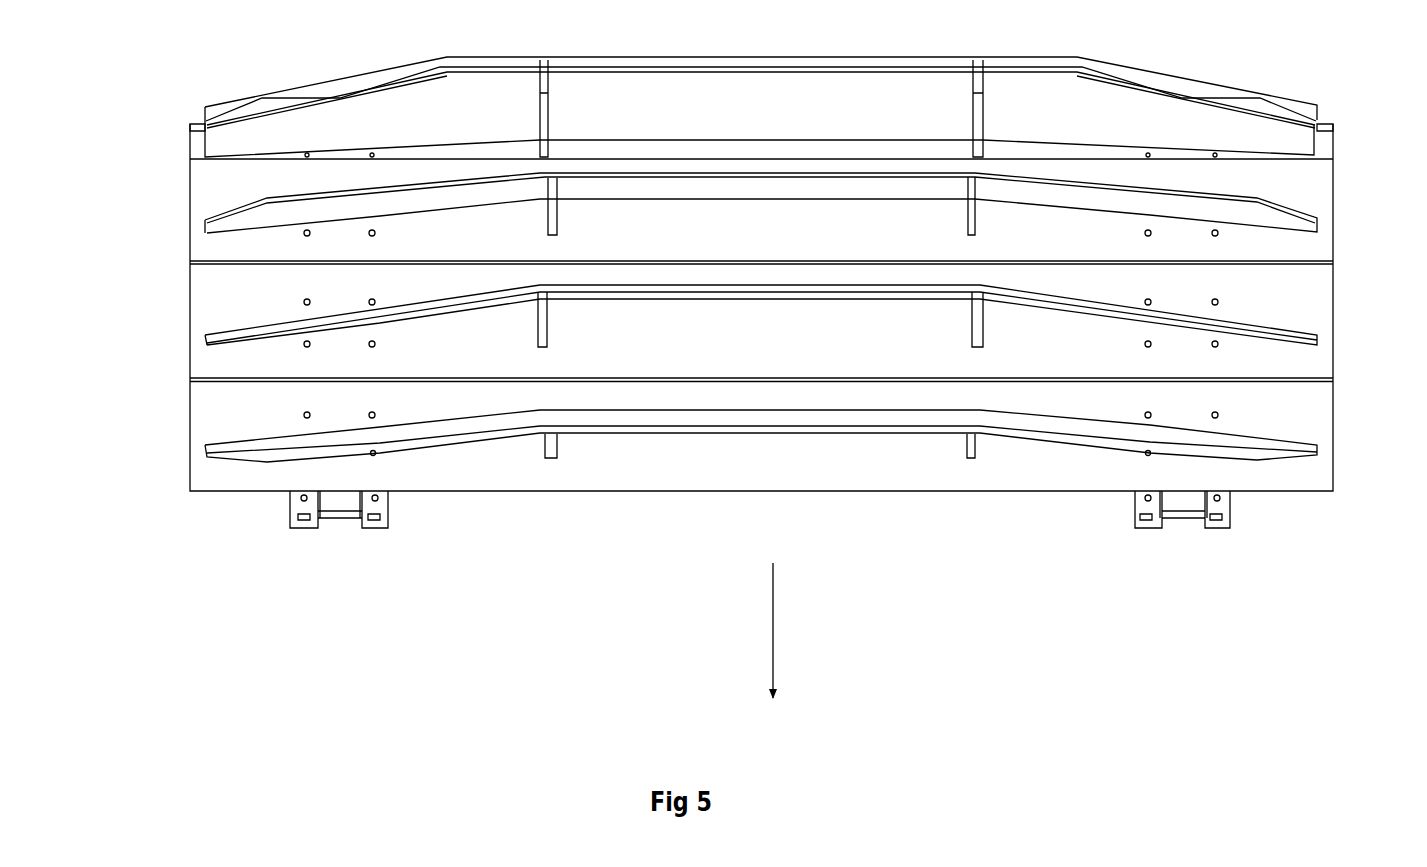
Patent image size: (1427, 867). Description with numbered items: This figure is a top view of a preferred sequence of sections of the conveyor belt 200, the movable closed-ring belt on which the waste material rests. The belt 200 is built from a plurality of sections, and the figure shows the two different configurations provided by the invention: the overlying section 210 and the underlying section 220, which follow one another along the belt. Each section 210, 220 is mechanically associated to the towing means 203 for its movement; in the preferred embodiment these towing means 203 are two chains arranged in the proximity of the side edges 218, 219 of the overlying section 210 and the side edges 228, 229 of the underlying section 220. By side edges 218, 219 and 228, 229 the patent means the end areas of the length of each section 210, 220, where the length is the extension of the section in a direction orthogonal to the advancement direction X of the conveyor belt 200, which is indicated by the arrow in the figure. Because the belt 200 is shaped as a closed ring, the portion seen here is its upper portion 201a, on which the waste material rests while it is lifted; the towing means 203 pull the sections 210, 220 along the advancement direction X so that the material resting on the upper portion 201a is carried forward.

The conveyor belt 200 is at (479, 623).
The upper portion 201a is at (717, 397).
The towing means 203 is at (302, 540).
The overlying section 210 is at (176, 226).
The side edge 218 is at (217, 250).
The side edge 219 is at (1302, 248).
The underlying section 220 is at (178, 349).
The side edge 228 is at (220, 320).
The side edge 229 is at (1290, 308).
The advancement direction X is at (775, 615).